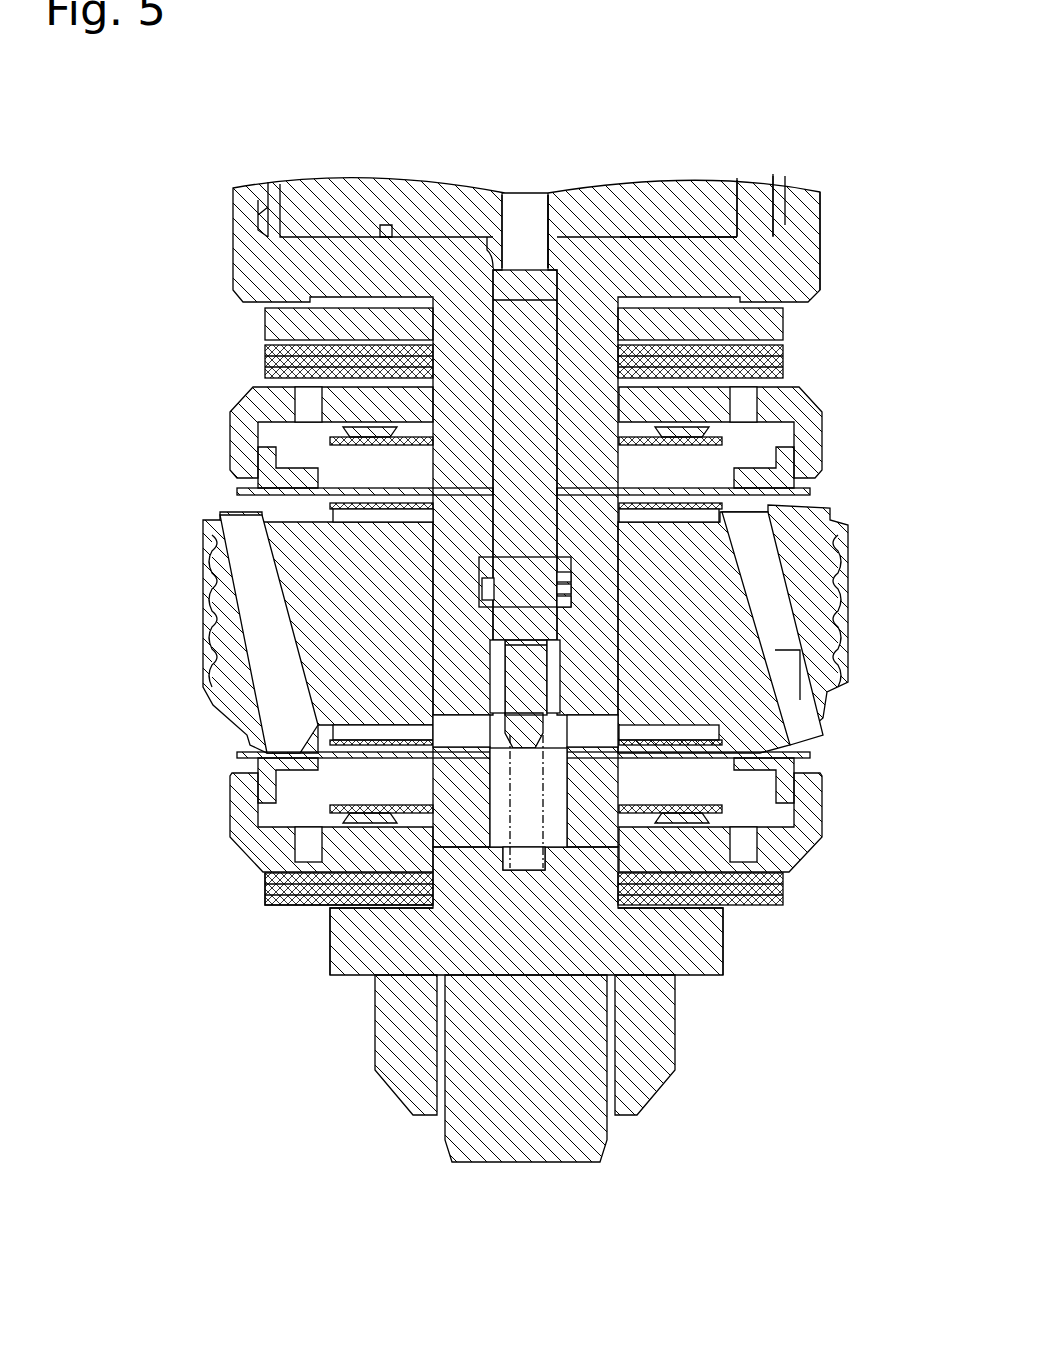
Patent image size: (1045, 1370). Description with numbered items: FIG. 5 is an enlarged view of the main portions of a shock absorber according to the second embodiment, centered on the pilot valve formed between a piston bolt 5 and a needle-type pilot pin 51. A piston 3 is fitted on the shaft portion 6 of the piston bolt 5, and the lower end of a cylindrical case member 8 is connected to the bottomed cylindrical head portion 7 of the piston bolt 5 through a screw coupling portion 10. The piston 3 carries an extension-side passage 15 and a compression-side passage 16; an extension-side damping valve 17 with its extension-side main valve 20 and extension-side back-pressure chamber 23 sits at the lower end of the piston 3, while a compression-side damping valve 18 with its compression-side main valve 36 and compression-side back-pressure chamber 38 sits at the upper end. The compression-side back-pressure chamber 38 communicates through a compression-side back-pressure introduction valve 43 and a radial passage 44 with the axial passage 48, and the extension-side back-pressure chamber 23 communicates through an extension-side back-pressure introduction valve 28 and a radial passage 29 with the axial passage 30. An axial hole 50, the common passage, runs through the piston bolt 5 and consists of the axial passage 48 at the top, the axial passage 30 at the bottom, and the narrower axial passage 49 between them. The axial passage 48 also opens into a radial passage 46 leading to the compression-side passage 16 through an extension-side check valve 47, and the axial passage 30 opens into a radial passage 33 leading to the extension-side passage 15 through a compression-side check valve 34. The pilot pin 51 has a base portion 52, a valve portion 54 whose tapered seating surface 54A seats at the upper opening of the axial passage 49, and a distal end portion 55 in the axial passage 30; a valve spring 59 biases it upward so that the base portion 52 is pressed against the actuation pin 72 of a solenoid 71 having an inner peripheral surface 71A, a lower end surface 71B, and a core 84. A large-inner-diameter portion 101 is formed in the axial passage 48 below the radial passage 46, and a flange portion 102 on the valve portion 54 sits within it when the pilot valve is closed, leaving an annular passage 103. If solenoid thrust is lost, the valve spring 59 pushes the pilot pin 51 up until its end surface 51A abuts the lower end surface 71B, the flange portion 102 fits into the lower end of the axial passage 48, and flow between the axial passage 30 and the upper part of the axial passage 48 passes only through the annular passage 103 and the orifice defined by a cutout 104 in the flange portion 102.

The core 84 is at (340, 195).
The lower end surface 71B is at (386, 238).
The end surface 51A is at (490, 265).
The actuation pin 72 is at (525, 195).
The inner peripheral surface 71A is at (548, 235).
The solenoid 71 is at (655, 175).
The case member 8 is at (760, 195).
The screw coupling portion 10 is at (790, 200).
The head portion 7 is at (812, 215).
The pilot pin 51 is at (488, 277).
The base portion 52 is at (535, 290).
The compression-side damping valve 18 is at (240, 340).
The radial passage 44 is at (762, 378).
The compression-side back-pressure introduction valve 43 is at (325, 418).
The compression-side back-pressure chamber 38 is at (770, 440).
The valve portion 54 is at (345, 460).
The compression-side main valve 36 is at (240, 493).
The extension-side check valve 47 is at (775, 496).
The radial passage 46 is at (700, 528).
The cutout 104 is at (493, 590).
The large-inner-diameter portion 101 is at (600, 570).
The annular passage 103 is at (567, 584).
The flange portion 102 is at (553, 617).
The compression-side passage 16 is at (270, 605).
The seating surface 54A is at (316, 664).
The axial passage 48 is at (787, 665).
The extension-side passage 15 is at (795, 672).
The piston 3 is at (512, 629).
The axial passage 49 is at (590, 717).
The distal end portion 55 is at (770, 745).
The extension-side main valve 20 is at (258, 756).
The extension-side back-pressure chamber 23 is at (430, 770).
The radial passage 33 is at (432, 840).
The compression-side check valve 34 is at (712, 765).
The extension-side damping valve 17 is at (275, 915).
The extension-side back-pressure introduction valve 28 is at (705, 855).
The radial passage 29 is at (490, 840).
The axial passage 30 is at (500, 862).
The piston bolt 5 is at (447, 1150).
The valve spring 59 is at (496, 870).
The axial hole 50 is at (552, 858).
The shaft portion 6 is at (590, 1135).